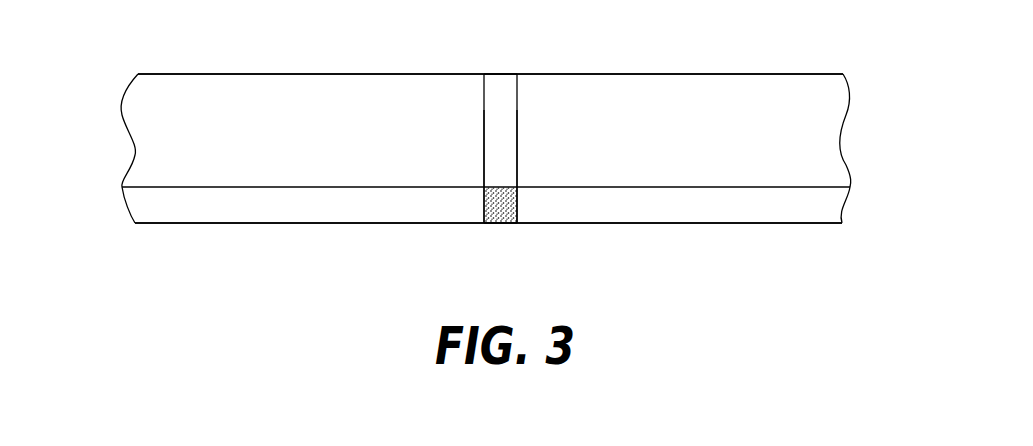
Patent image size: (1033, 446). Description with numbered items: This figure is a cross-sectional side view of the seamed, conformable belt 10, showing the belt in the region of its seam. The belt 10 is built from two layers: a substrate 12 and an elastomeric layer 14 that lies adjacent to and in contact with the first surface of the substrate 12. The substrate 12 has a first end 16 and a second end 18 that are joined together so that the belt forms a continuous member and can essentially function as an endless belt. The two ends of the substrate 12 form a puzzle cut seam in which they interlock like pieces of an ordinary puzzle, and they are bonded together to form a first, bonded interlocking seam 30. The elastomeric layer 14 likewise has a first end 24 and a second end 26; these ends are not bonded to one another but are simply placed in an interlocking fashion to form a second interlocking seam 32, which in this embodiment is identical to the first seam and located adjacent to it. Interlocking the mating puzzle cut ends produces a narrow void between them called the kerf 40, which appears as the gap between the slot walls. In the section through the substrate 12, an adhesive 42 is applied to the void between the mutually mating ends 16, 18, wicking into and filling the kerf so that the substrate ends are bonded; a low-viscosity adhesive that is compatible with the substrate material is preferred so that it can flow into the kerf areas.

The belt 10 is at (113, 70).
The substrate 12 is at (710, 213).
The elastomeric layer 14 is at (820, 136).
The first end 16 is at (484, 203).
The second end 18 is at (517, 205).
The first end 24 is at (484, 110).
The second end 26 is at (517, 110).
The first interlocking seam 30 is at (492, 230).
The second interlocking seam 32 is at (520, 88).
The kerf 40 is at (502, 146).
The adhesive 42 is at (503, 224).